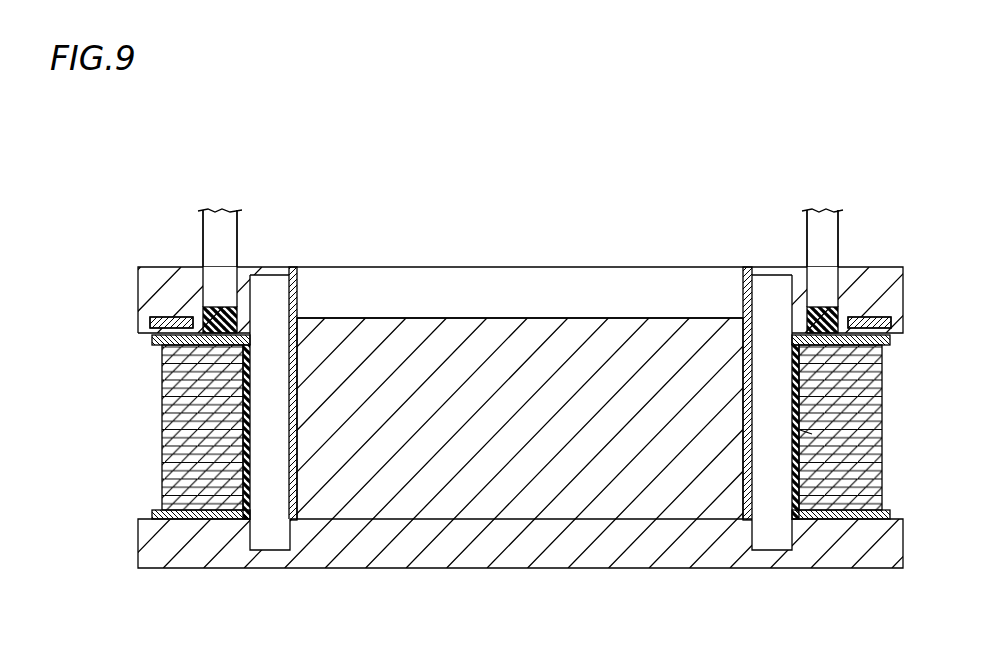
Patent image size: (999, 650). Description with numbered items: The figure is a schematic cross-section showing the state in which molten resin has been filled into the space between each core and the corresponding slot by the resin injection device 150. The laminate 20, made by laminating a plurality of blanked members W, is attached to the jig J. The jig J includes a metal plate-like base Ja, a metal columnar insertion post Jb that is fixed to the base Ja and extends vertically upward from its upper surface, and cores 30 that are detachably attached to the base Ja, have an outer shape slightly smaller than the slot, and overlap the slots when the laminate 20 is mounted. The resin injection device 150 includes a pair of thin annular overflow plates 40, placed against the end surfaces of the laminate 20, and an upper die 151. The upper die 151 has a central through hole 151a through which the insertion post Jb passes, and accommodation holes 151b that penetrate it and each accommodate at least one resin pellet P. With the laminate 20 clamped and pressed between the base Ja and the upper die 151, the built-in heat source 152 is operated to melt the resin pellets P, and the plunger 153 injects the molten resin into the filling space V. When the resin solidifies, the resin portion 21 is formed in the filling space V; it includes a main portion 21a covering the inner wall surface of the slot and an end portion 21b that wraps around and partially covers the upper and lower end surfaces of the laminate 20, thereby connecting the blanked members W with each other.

The resin injection device 150 is at (903, 172).
The upper die 151 is at (866, 275).
The through hole 151a is at (300, 295).
The accommodation hole 151b is at (209, 280).
The built-in heat source 152 is at (160, 312).
The plunger 153 is at (203, 240).
The laminate 20 is at (942, 420).
The resin portion 21 is at (492, 413).
The main portion 21a is at (165, 414).
The end portion 21b is at (245, 330).
The core 30 is at (270, 545).
The overflow plate 40 is at (890, 340).
The jig J is at (926, 549).
The base Ja is at (878, 560).
The insertion post Jb is at (505, 330).
The resin pellet P is at (253, 335).
The blanked member W is at (162, 456).
The filling space V is at (800, 432).